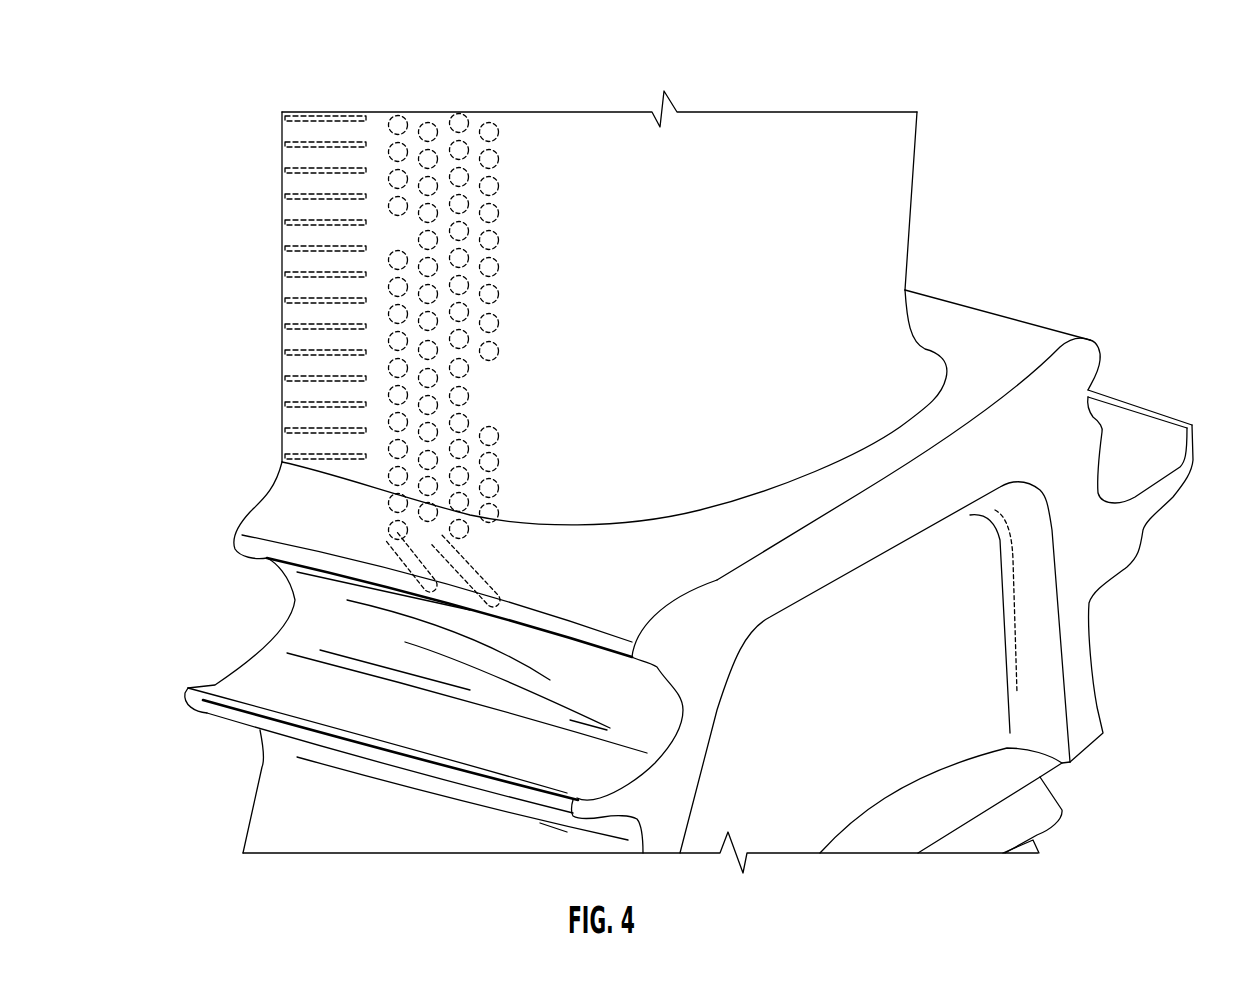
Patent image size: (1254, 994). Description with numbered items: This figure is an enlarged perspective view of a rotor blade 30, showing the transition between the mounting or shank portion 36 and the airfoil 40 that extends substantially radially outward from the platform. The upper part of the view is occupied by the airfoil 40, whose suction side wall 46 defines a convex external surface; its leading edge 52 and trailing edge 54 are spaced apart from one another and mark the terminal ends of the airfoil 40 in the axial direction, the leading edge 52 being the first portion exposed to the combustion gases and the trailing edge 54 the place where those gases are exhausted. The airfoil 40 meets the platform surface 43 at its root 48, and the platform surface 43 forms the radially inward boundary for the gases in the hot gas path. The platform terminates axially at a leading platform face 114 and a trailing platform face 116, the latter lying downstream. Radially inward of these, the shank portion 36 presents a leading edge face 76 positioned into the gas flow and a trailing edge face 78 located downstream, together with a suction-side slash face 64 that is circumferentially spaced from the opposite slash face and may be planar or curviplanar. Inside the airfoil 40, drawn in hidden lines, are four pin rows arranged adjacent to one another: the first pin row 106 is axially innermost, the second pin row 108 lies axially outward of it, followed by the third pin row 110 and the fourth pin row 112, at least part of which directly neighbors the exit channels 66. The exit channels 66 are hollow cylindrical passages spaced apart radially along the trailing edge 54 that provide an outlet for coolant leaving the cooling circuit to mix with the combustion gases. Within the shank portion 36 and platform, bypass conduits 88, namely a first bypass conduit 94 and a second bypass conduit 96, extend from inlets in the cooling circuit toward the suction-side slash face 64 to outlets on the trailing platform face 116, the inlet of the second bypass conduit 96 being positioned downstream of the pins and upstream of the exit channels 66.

The rotor blade 30 is at (150, 63).
The shank portion 36 is at (1212, 456).
The airfoil 40 is at (236, 321).
The platform surface 43 is at (990, 328).
The suction side wall 46 is at (832, 124).
The root 48 is at (806, 476).
The leading edge 52 is at (918, 146).
The trailing edge 54 is at (282, 211).
The suction-side slash face 64 is at (698, 740).
The exit channels 66 is at (278, 143).
The leading edge face 76 is at (1106, 414).
The trailing edge face 78 is at (303, 612).
The bypass conduits 88 is at (435, 556).
The first bypass conduit 94 is at (468, 566).
The second bypass conduit 96 is at (384, 545).
The first pin row 106 is at (491, 128).
The second pin row 108 is at (460, 121).
The third pin row 110 is at (428, 130).
The fourth pin row 112 is at (398, 122).
The leading platform face 114 is at (1060, 327).
The trailing platform face 116 is at (247, 543).